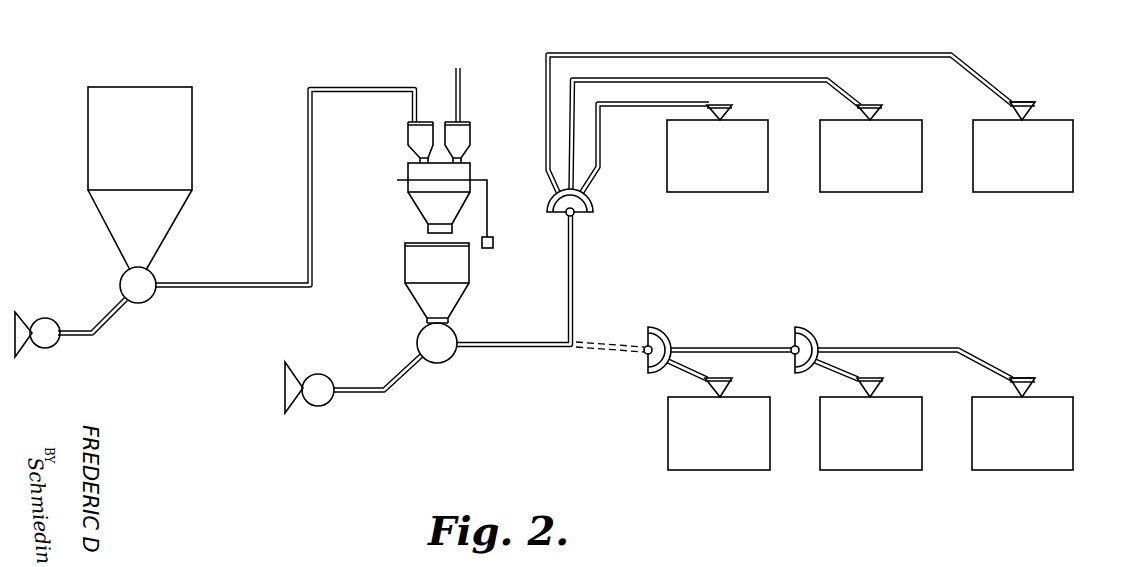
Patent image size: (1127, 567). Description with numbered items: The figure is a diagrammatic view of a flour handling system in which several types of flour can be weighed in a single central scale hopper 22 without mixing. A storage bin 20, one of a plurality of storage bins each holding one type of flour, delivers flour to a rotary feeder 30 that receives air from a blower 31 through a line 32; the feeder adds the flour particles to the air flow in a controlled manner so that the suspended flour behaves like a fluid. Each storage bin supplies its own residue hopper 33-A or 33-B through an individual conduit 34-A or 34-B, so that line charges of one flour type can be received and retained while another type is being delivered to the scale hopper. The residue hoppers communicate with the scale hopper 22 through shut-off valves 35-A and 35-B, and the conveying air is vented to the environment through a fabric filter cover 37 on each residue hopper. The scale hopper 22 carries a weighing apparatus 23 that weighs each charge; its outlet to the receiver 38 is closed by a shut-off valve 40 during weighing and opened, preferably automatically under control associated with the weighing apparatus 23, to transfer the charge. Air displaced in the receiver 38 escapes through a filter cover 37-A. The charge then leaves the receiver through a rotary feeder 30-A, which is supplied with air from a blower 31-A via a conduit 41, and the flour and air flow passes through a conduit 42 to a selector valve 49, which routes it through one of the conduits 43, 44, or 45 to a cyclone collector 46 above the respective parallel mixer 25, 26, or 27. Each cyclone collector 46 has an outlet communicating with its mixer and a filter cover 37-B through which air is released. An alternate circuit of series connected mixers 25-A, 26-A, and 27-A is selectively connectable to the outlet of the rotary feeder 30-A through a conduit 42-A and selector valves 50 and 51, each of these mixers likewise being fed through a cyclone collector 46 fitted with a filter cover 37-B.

The storage bin 20 is at (153, 88).
The scale hopper 22 is at (408, 205).
The weighing apparatus 23 is at (488, 203).
The mixer 25 is at (709, 185).
The mixer 26 is at (857, 185).
The mixer 27 is at (1007, 185).
The series connected mixer 25-A is at (700, 461).
The series connected mixer 26-A is at (855, 461).
The series connected mixer 27-A is at (1002, 461).
The rotary feeder 30 is at (126, 285).
The rotary feeder 30-A is at (423, 342).
The blower 31 is at (42, 320).
The blower 31-A is at (330, 397).
The line 32 is at (76, 337).
The residue hopper 33-A is at (417, 133).
The residue hopper 33-B is at (459, 145).
The conduit 34-A is at (308, 242).
The conduit 34-B is at (461, 81).
The shut-off valve 35-A is at (420, 161).
The shut-off valve 35-B is at (457, 164).
The filter cover 37 is at (426, 120).
The filter cover 37-A is at (414, 243).
The filter cover 37-B is at (1019, 100).
The receiver 38 is at (460, 272).
The shut-off valve 40 is at (430, 228).
The conduit 41 is at (411, 378).
The conduit 42 is at (483, 345).
The conduit 42-A is at (605, 347).
The conduit 43 is at (748, 53).
The conduit 44 is at (791, 82).
The conduit 45 is at (601, 132).
The cyclone collector 46 is at (724, 114).
The selector valve 49 is at (591, 207).
The selector valve 50 is at (686, 298).
The selector valve 51 is at (829, 298).